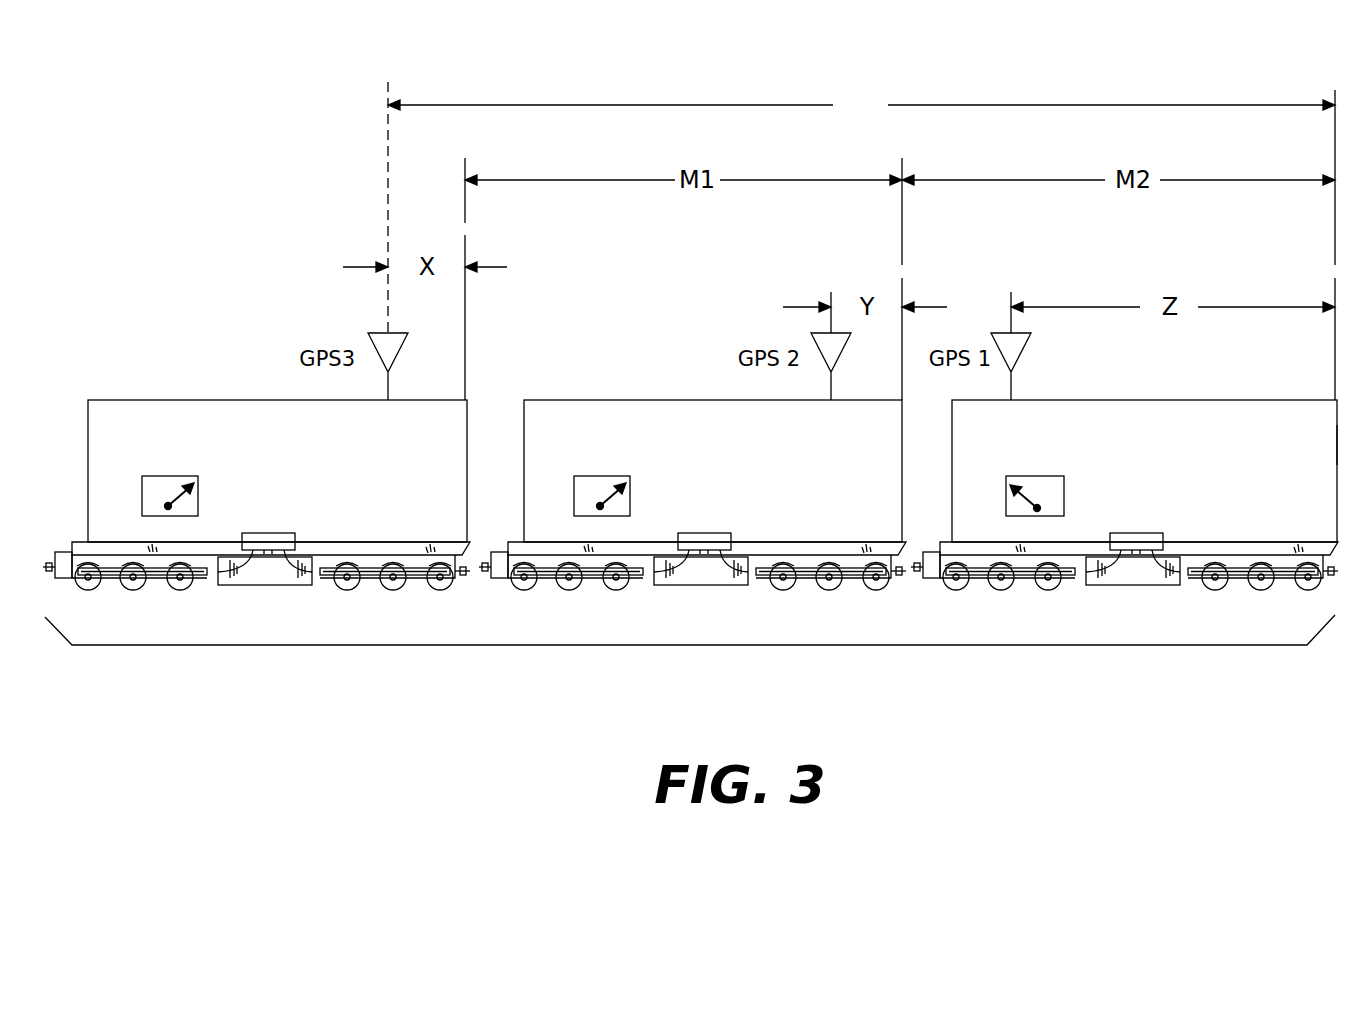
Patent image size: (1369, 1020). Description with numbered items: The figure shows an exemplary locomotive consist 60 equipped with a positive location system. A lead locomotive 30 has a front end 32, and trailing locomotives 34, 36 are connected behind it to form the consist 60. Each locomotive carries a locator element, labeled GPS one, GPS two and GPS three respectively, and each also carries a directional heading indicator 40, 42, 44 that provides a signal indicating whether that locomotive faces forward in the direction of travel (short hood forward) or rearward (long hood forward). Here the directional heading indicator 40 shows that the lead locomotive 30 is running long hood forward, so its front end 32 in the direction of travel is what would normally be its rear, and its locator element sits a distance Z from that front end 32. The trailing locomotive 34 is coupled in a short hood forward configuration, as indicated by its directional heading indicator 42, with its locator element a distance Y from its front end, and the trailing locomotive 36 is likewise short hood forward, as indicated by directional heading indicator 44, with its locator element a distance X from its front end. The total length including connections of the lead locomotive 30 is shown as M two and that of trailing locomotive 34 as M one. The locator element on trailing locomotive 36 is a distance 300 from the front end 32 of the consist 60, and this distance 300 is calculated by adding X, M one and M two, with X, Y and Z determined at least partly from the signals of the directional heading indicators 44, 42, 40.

The lead locomotive 30 is at (1165, 472).
The front end 32 is at (1337, 445).
The trailing locomotive 34 is at (730, 472).
The trailing locomotive 36 is at (294, 472).
The directional heading indicator 40 is at (1064, 502).
The directional heading indicator 42 is at (630, 502).
The directional heading indicator 44 is at (198, 502).
The locomotive consist 60 is at (758, 647).
The distance 300 is at (861, 105).